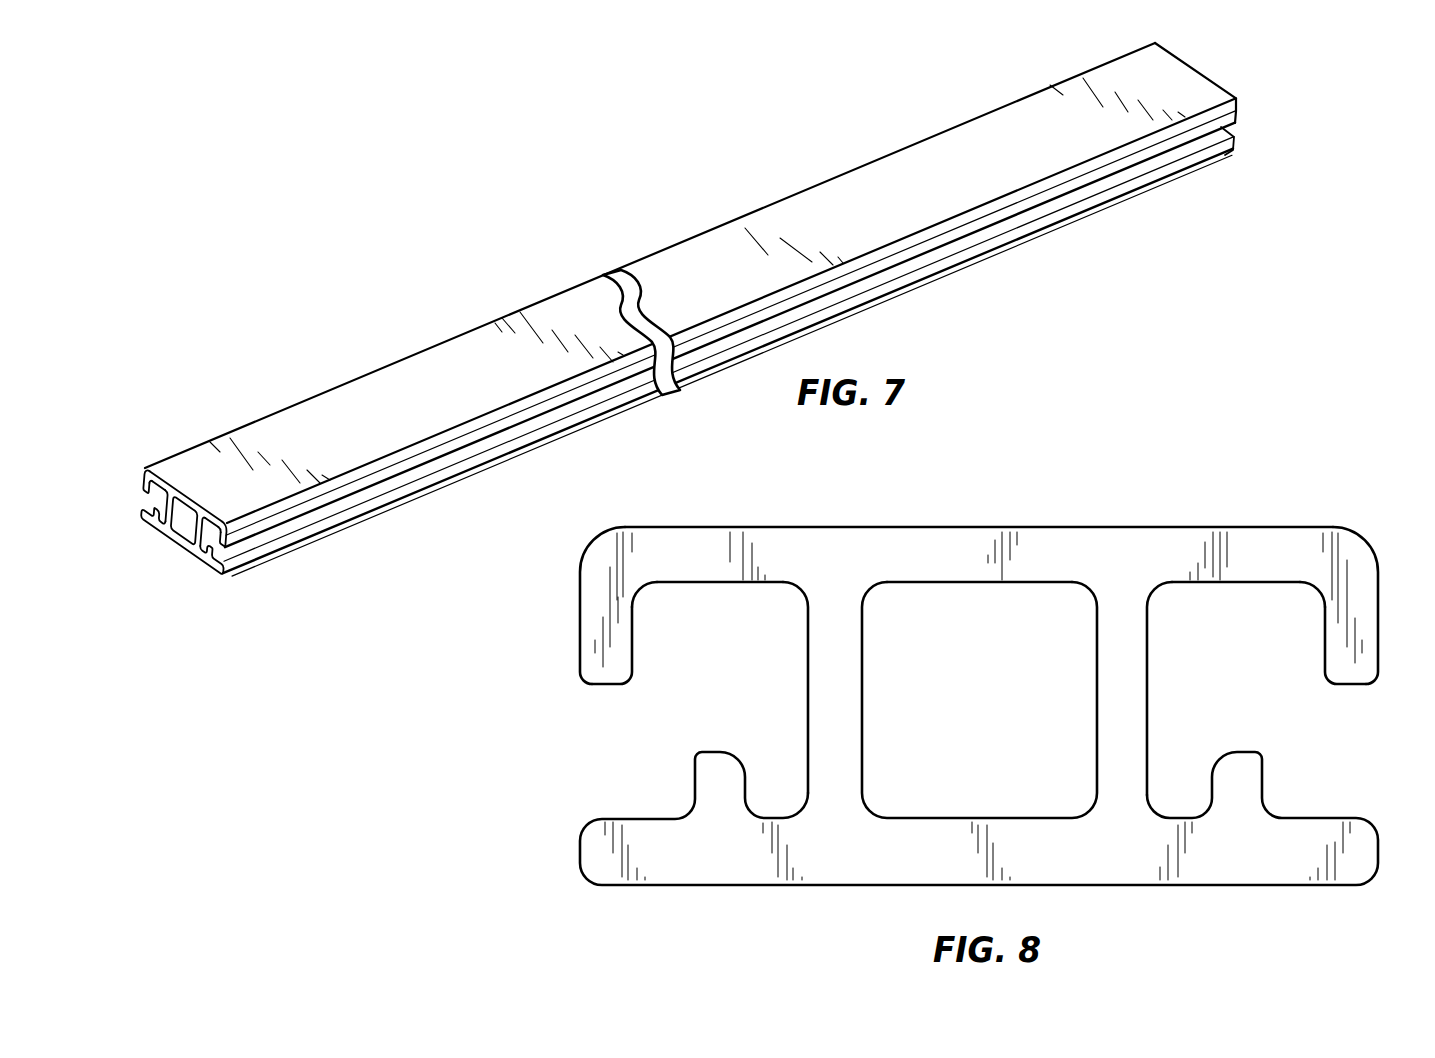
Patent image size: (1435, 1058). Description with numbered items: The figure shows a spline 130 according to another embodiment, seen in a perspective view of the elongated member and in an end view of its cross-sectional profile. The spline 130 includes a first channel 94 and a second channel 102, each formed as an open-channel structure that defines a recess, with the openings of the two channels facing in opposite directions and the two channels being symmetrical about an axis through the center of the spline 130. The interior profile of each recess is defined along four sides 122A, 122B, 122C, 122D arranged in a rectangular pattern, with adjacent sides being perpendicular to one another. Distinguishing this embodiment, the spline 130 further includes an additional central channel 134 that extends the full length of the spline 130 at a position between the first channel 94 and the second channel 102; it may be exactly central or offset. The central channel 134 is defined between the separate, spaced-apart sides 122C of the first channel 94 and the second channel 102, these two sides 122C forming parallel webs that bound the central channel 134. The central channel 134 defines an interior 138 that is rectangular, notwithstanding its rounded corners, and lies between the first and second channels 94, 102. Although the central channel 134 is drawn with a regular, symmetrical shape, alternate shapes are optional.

In FIG. 7, the spline 130 is at (678, 344).
In FIG. 8, the spline 130 is at (967, 688).
In FIG. 7, the first channel 94 is at (138, 493).
In FIG. 8, the first channel 94 is at (596, 582).
In FIG. 7, the second channel 102 is at (248, 570).
In FIG. 8, the second channel 102 is at (1243, 541).
In FIG. 7, the central channel 134 is at (140, 540).
In FIG. 8, the central channel 134 is at (925, 582).
In FIG. 7, the interior 138 is at (184, 532).
In FIG. 8, the interior 138 is at (863, 757).
In FIG. 8, the side 122A is at (620, 657).
In FIG. 8, the side 122B is at (673, 551).
In FIG. 8, the side 122C is at (825, 697).
In FIG. 8, the side 122D is at (727, 864).